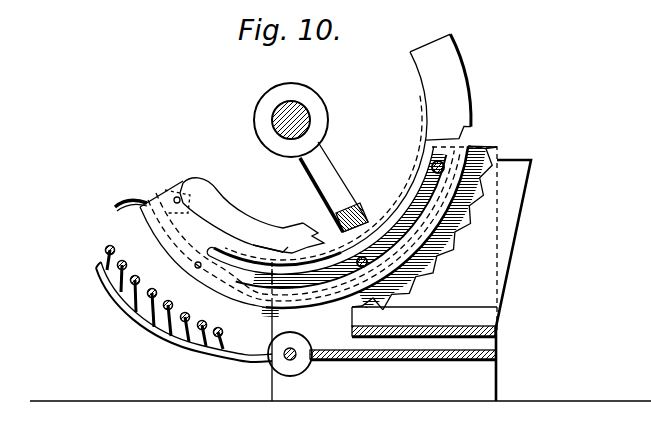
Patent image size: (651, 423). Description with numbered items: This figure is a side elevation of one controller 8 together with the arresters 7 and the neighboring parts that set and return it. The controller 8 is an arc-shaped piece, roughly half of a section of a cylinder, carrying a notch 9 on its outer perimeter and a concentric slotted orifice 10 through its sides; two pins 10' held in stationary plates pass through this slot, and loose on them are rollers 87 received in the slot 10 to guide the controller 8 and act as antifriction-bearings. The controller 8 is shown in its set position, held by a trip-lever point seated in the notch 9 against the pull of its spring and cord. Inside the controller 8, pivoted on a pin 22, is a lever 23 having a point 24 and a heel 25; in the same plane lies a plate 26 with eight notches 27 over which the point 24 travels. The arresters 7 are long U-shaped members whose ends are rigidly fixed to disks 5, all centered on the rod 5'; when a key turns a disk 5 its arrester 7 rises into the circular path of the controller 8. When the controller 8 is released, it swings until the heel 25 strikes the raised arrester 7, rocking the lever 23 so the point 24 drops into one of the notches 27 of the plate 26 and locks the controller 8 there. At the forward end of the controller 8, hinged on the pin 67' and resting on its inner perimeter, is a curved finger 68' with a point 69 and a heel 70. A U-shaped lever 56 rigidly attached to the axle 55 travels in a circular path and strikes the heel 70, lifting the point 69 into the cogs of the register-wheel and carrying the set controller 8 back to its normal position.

The disk 5 is at (403, 369).
The rod 5' is at (277, 363).
The arrester 7 is at (116, 251).
The controller 8 is at (440, 87).
The notch 9 is at (472, 138).
The slotted orifice 10 is at (320, 163).
The pin 10' is at (341, 234).
The pin 22 is at (200, 261).
The lever 23 is at (265, 296).
The point 24 is at (350, 302).
The heel 25 is at (137, 188).
The plate 26 is at (441, 280).
The notch 27 is at (440, 253).
The axle 55 is at (293, 113).
The U-shaped lever 56 is at (330, 177).
The pin 67' is at (191, 182).
The curved finger 68' is at (241, 215).
The point 69 is at (276, 227).
The heel 70 is at (308, 238).
The sleeve or roller 87 is at (433, 164).